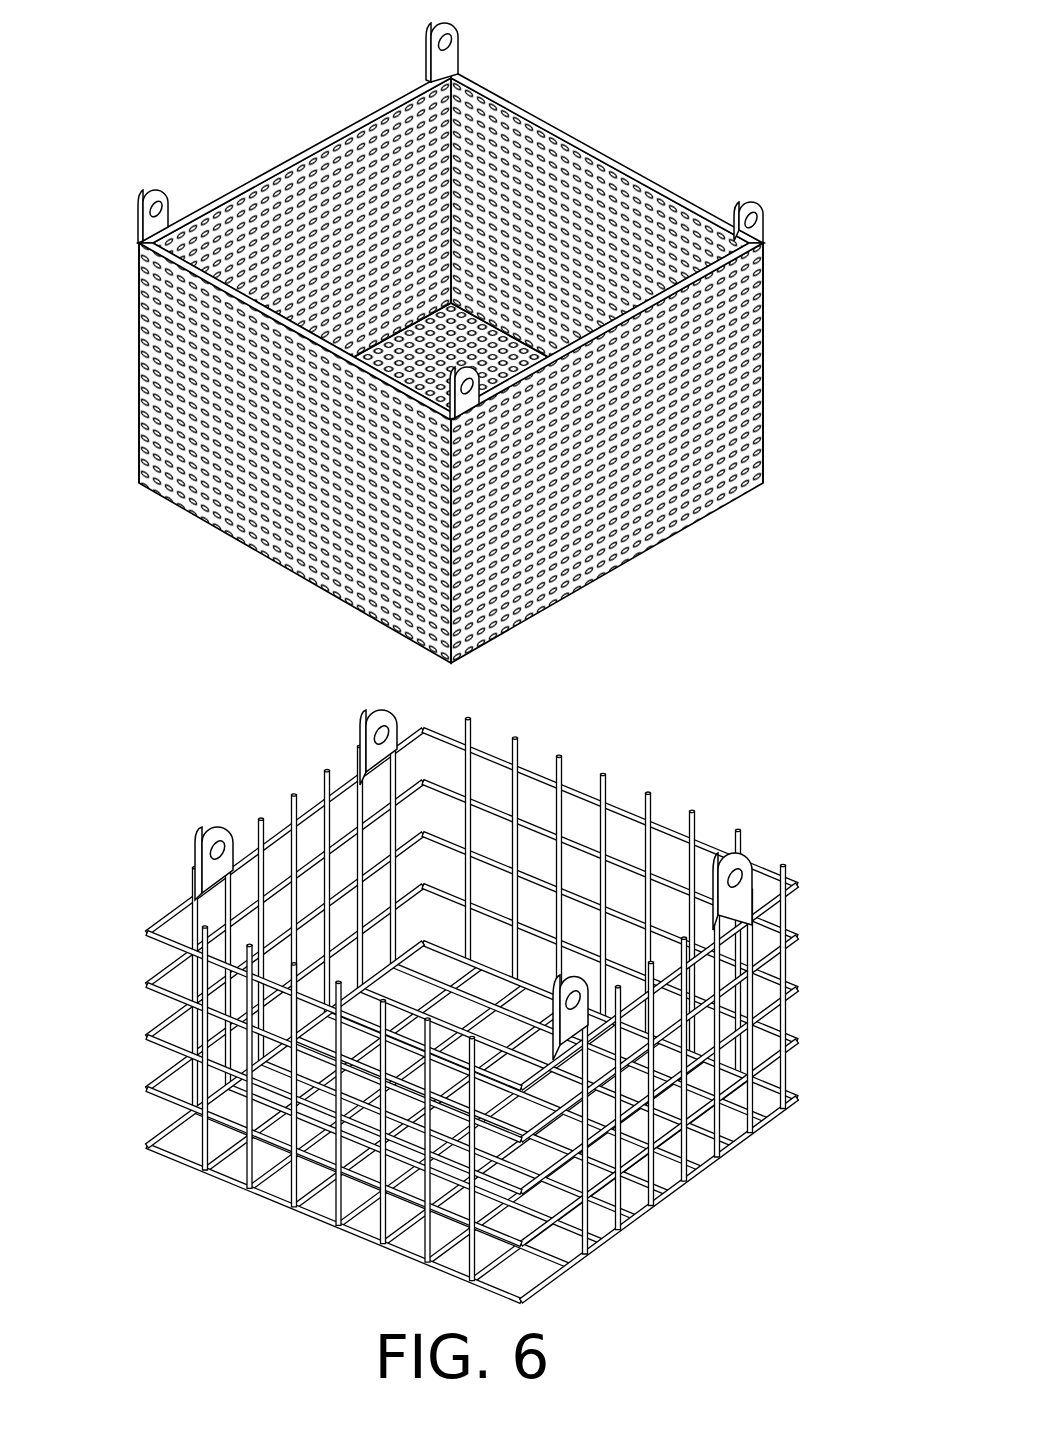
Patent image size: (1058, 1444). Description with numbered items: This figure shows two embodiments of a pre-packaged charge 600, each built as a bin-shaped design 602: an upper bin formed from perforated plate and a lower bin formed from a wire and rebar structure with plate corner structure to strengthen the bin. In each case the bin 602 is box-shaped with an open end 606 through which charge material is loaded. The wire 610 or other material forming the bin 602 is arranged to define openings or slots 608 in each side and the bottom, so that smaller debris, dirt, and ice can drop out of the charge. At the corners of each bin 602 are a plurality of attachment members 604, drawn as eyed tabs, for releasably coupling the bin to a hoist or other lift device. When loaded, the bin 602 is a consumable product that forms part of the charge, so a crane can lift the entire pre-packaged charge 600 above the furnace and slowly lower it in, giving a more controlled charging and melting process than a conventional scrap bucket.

The pre-packaged charge 600 is at (475, 653).
The bin 602 is at (511, 683).
The attachment member 604 is at (432, 62).
The open end 606 is at (488, 300).
The openings or slots 608 is at (749, 300).
The wire 610 is at (614, 843).